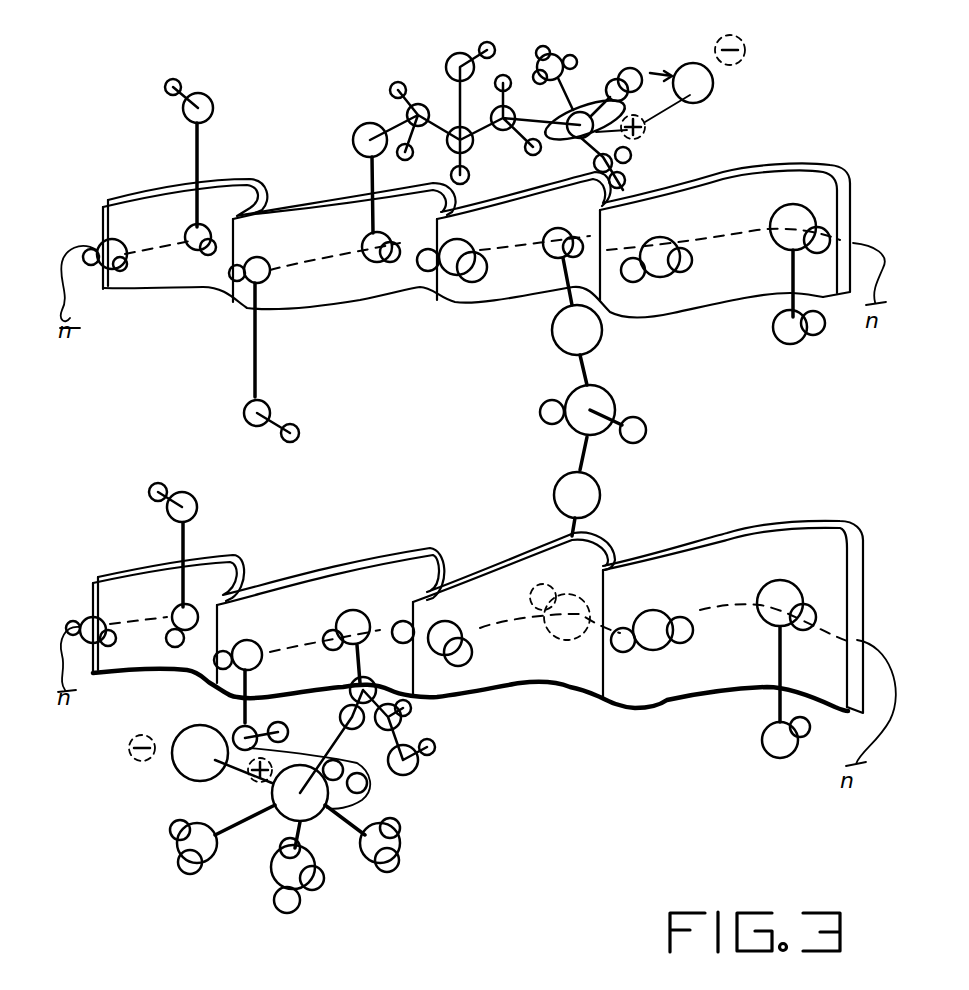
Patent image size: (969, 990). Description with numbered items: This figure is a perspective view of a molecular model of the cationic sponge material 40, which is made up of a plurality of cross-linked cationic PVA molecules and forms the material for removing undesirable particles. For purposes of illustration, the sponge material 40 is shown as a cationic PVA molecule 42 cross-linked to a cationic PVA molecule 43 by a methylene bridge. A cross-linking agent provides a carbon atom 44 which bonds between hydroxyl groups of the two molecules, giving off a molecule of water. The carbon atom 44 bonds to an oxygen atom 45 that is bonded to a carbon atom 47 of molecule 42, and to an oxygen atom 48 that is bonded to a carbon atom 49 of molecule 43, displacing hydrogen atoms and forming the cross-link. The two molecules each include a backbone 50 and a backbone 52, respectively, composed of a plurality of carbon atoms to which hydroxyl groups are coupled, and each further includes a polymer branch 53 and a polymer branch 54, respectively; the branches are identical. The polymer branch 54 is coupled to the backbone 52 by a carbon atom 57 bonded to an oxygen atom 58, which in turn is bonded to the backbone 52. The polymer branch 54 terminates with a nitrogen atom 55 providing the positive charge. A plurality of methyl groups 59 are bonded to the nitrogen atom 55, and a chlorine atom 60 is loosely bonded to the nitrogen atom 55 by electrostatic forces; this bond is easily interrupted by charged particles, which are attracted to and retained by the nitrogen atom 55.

The cationic sponge material 40 is at (812, 815).
The cationic PVA molecule 42 is at (797, 156).
The cationic PVA molecule 43 is at (827, 507).
The carbon atom 44 is at (612, 388).
The oxygen atom 45 is at (603, 330).
The carbon atom 47 is at (577, 205).
The oxygen atom 48 is at (598, 497).
The carbon atom 49 is at (548, 632).
The backbone 50 is at (725, 192).
The backbone 52 is at (725, 545).
The polymer branch 53 is at (377, 91).
The polymer branch 54 is at (447, 825).
The nitrogen atom 55 is at (327, 815).
The carbon atom 57 is at (397, 723).
The oxygen atom 58 is at (347, 697).
The methyl groups 59 is at (163, 859).
The chlorine atom 60 is at (185, 768).